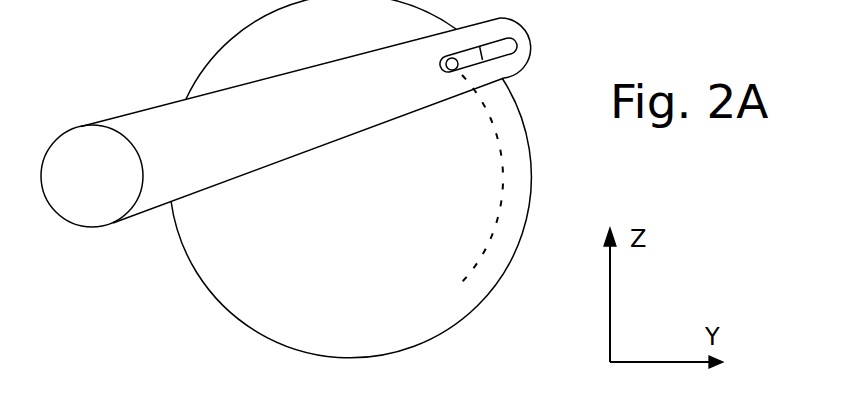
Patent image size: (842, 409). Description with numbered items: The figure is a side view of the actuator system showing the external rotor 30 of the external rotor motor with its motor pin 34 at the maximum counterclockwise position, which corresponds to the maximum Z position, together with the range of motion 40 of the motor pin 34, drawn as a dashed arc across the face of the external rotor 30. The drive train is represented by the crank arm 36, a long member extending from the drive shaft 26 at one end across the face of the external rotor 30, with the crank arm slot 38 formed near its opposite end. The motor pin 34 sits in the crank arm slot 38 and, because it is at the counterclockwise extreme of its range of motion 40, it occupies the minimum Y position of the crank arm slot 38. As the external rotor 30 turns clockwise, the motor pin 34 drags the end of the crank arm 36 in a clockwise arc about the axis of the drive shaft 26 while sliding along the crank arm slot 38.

The drive shaft 26 is at (107, 184).
The external rotor 30 is at (365, 202).
The motor pin 34 is at (447, 59).
The crank arm 36 is at (310, 122).
The crank arm slot 38 is at (492, 49).
The range of motion 40 is at (485, 245).